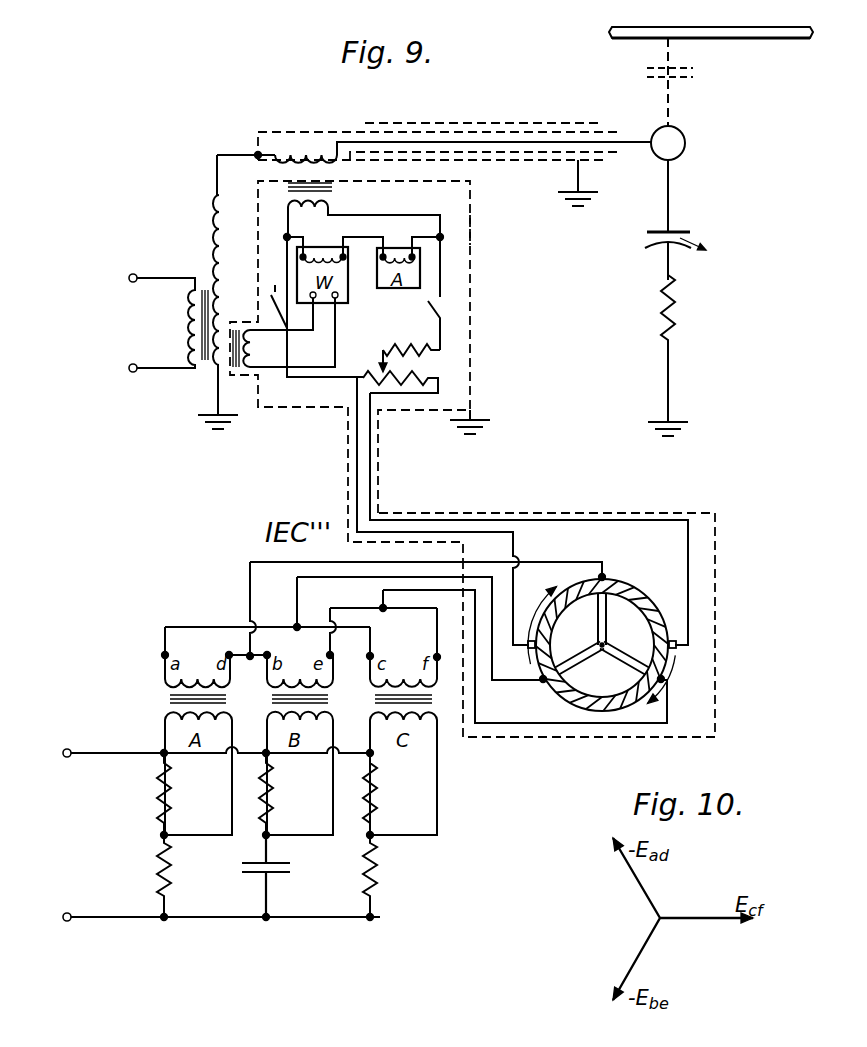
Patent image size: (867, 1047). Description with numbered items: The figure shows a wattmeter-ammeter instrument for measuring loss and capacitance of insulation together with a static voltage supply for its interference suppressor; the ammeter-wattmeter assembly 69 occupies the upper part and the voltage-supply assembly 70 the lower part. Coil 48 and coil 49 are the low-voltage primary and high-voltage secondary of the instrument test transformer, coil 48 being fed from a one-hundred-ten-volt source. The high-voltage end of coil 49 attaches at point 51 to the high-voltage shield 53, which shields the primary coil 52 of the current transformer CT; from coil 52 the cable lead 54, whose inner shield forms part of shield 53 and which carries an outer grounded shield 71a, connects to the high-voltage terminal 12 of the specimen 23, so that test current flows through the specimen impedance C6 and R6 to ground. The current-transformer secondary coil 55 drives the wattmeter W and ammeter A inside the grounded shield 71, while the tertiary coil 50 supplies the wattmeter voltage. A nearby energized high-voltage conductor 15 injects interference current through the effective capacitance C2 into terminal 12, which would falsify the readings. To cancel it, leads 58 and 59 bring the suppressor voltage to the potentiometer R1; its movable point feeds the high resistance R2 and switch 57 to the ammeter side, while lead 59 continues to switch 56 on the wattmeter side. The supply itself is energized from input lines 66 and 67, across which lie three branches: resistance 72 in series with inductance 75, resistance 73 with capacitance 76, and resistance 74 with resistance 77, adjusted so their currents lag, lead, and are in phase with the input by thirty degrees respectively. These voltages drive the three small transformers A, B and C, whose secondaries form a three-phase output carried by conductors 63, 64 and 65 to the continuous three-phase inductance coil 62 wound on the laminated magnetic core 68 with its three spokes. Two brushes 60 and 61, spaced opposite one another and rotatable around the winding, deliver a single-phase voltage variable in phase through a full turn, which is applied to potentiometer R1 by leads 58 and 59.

The high-voltage conductor 15 is at (727, 37).
The effective capacitance C2 is at (690, 73).
The high-voltage terminal 12 is at (682, 153).
The specimen 23 is at (662, 268).
The specimen capacitance C6 is at (692, 221).
The specimen resistance R6 is at (673, 300).
The connection point 51 is at (257, 152).
The current transformer primary coil 52 is at (306, 155).
The high-voltage shield 53 is at (343, 132).
The cable lead 54 is at (520, 142).
The outer grounded shield 71a is at (568, 125).
The high-voltage secondary coil 49 is at (213, 249).
The low-voltage primary coil 48 is at (187, 331).
The current transformer secondary coil 55 is at (298, 201).
The switch 56 is at (273, 296).
The tertiary coil 50 is at (253, 346).
The switch 57 is at (428, 304).
The high resistance R2 is at (393, 350).
The potentiometer R1 is at (372, 378).
The shield 71 is at (472, 230).
The ammeter-wattmeter assembly 69 is at (519, 324).
The lead 58 is at (371, 425).
The lead 59 is at (358, 440).
The voltage-supply assembly 70 is at (756, 658).
The conductor 63 is at (580, 557).
The conductor 64 is at (494, 600).
The conductor 65 is at (527, 723).
The input line 66 is at (92, 757).
The input line 67 is at (89, 915).
The resistance 72 is at (160, 785).
The resistance 73 is at (263, 786).
The resistance 74 is at (366, 786).
The inductance 75 is at (168, 883).
The capacitance 76 is at (276, 878).
The resistance 77 is at (376, 883).
The three-phase inductance coil 62 is at (651, 609).
The magnetic core 68 is at (622, 593).
The brush 60 is at (530, 651).
The brush 61 is at (677, 650).